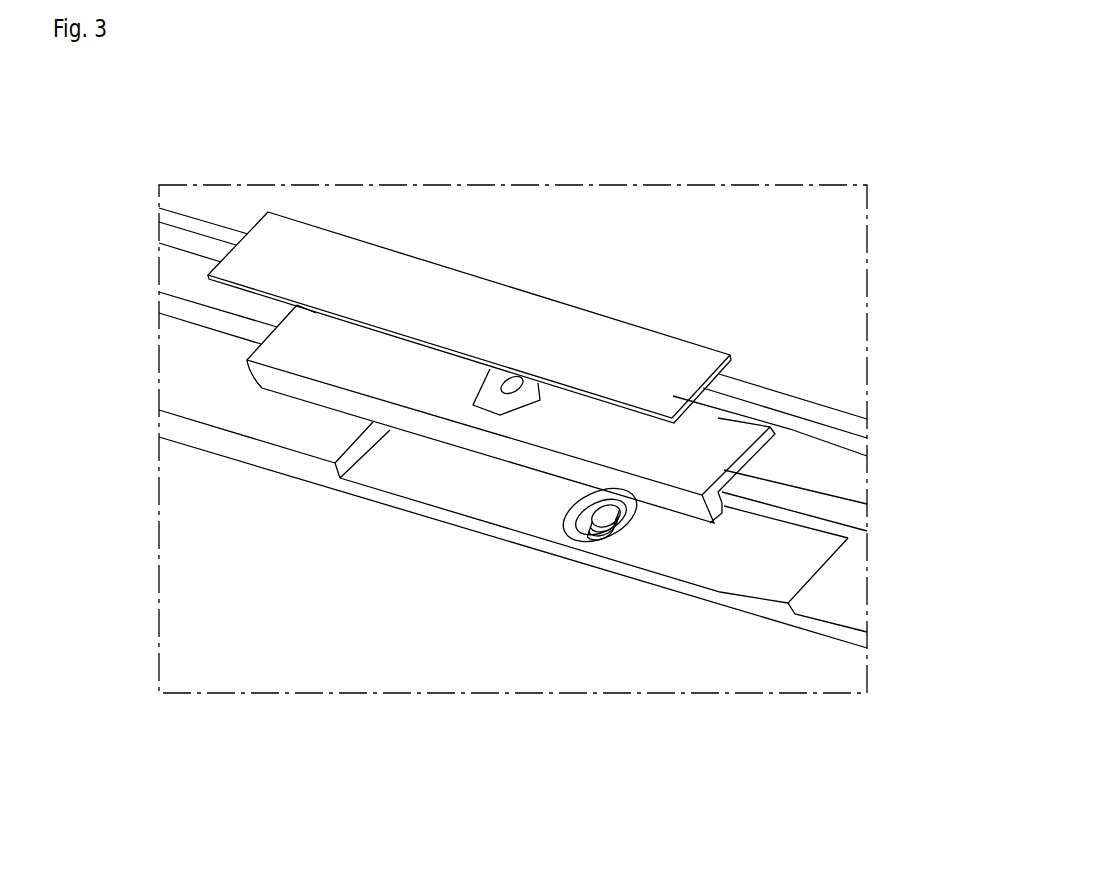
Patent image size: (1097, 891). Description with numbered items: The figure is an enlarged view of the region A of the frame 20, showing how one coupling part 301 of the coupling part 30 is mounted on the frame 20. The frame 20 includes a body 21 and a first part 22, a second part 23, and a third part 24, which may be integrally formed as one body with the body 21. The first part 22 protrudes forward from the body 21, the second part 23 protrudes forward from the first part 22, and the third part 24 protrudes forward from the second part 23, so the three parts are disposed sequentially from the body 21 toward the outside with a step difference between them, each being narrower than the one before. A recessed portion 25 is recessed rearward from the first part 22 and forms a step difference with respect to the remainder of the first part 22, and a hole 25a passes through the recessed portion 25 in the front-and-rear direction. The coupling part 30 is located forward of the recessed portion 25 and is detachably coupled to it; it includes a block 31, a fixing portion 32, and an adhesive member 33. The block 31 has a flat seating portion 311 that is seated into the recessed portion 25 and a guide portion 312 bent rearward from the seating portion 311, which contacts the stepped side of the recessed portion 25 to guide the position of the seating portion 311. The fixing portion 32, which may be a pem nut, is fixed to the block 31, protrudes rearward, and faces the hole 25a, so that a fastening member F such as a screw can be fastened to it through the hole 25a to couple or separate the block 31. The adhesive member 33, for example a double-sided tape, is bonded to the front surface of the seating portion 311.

The region A is at (197, 120).
The frame 20 is at (552, 535).
The body 21 is at (795, 683).
The first part 22 is at (830, 600).
The second part 23 is at (833, 477).
The third part 24 is at (857, 423).
The recessed portion 25 is at (503, 617).
The hole 25a is at (620, 527).
The fastening member F is at (606, 522).
The coupling part 30 is at (491, 546).
The coupling part 301 is at (491, 546).
The block 31 is at (696, 290).
The seating portion 311 is at (732, 477).
The guide portion 312 is at (713, 522).
The fixing portion 32 is at (502, 405).
The adhesive member 33 is at (425, 297).